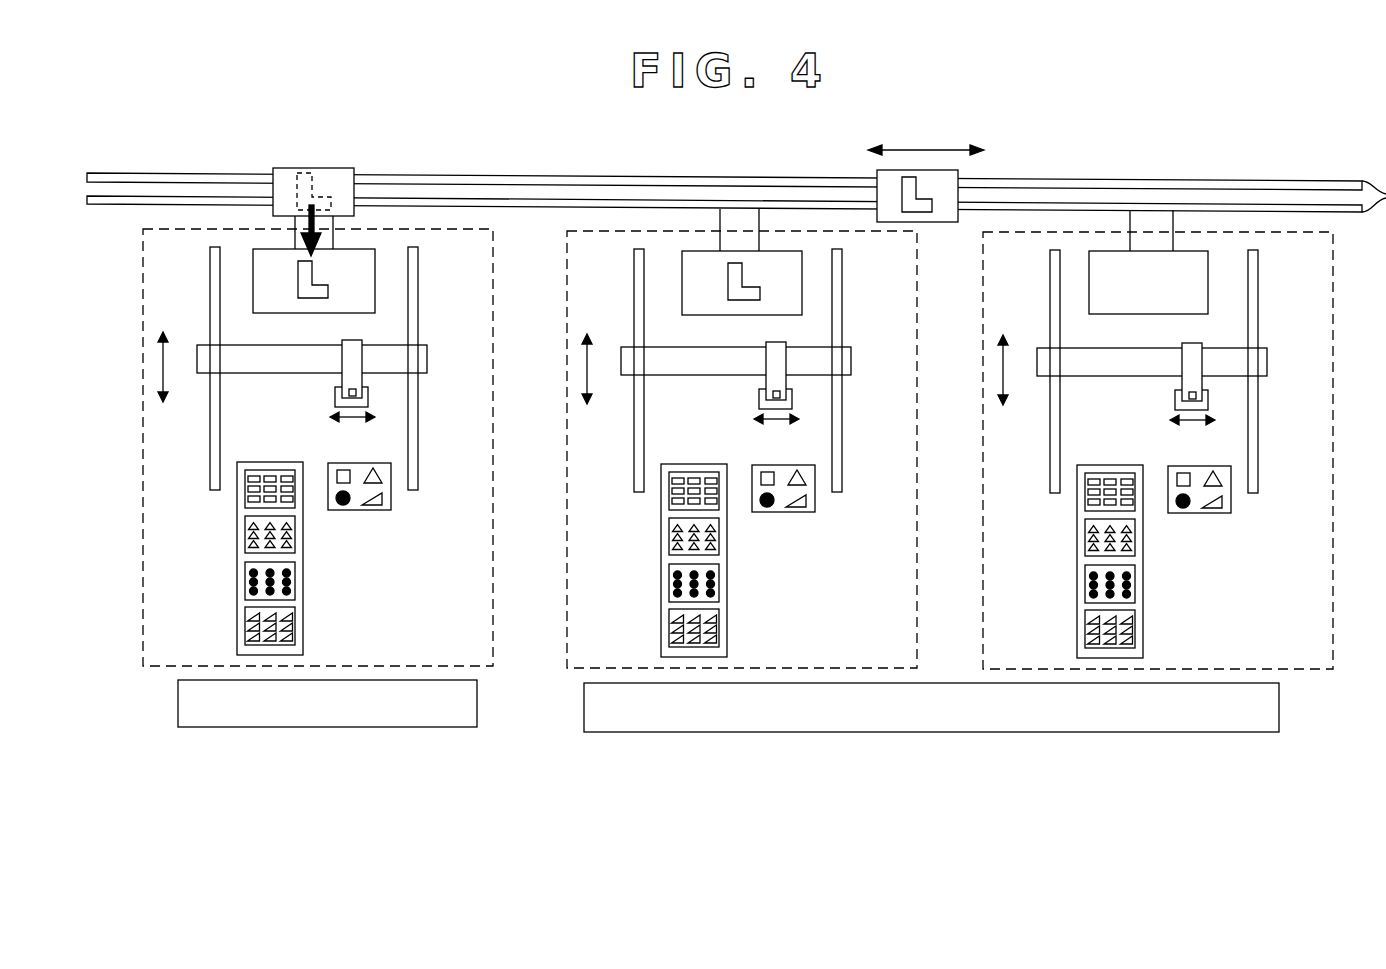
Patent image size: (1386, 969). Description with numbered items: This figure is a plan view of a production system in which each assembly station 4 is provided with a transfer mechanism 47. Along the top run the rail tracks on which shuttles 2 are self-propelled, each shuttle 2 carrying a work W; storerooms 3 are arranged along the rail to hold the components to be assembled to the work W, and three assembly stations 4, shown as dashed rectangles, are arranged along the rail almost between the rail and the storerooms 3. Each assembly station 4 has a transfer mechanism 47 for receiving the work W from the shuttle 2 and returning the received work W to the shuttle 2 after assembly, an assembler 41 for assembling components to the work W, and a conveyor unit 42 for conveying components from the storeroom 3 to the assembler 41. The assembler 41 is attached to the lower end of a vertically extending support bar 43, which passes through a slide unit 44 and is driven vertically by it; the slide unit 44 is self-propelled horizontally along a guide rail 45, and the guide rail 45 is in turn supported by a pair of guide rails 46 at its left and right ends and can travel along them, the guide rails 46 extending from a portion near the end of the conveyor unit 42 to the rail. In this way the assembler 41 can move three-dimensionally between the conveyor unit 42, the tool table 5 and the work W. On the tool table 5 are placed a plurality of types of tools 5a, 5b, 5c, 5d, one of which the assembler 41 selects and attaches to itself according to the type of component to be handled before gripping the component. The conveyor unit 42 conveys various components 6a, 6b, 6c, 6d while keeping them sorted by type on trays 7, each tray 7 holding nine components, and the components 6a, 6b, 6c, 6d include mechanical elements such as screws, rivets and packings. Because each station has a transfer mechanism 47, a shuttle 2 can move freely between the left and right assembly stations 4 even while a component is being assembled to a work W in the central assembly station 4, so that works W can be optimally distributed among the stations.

The shuttle 2 is at (338, 168).
The storeroom 3 is at (313, 728).
The assembly station 4 is at (493, 343).
The tool table 5 is at (404, 507).
The tool 5a is at (345, 469).
The tool 5b is at (374, 468).
The tool 5c is at (345, 506).
The tool 5d is at (376, 506).
The component 6a is at (257, 471).
The component 6b is at (245, 545).
The component 6c is at (245, 577).
The component 6d is at (245, 617).
The tray 7 is at (244, 528).
The assembler 41 is at (324, 397).
The conveyor unit 42 is at (226, 642).
The support bar 43 is at (369, 399).
The slide unit 44 is at (352, 350).
The guide rail 45 is at (426, 359).
The guide rail 46 is at (210, 276).
The transfer mechanism 47 is at (259, 239).
The work W is at (308, 182).